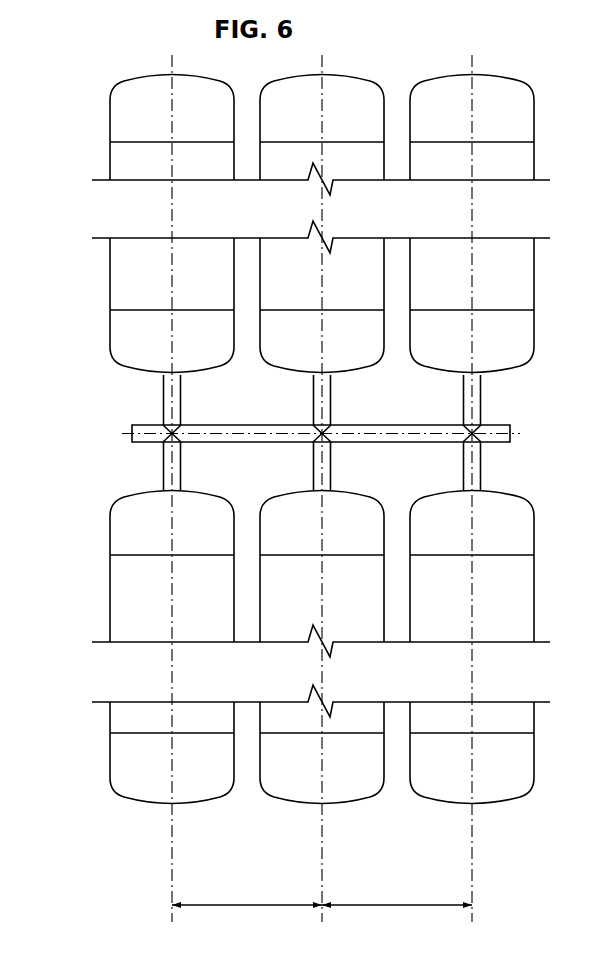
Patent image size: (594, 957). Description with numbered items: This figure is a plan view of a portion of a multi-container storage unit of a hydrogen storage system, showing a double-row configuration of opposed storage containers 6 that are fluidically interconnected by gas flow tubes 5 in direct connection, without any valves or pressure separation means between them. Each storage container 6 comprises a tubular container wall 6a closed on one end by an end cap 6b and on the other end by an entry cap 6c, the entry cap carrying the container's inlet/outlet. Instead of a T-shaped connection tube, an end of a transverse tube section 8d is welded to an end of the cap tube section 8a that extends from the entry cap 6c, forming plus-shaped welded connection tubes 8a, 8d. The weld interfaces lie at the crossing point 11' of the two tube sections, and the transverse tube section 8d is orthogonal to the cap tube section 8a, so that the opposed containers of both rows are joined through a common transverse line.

The gas flow tube 5 is at (134, 460).
The storage container 6 is at (120, 79).
The tubular container wall 6a is at (108, 280).
The end cap 6b is at (107, 118).
The entry cap 6c is at (108, 340).
The cap tube section 8a is at (165, 400).
The transverse tube section 8d is at (263, 432).
The crossing point 11' is at (322, 416).